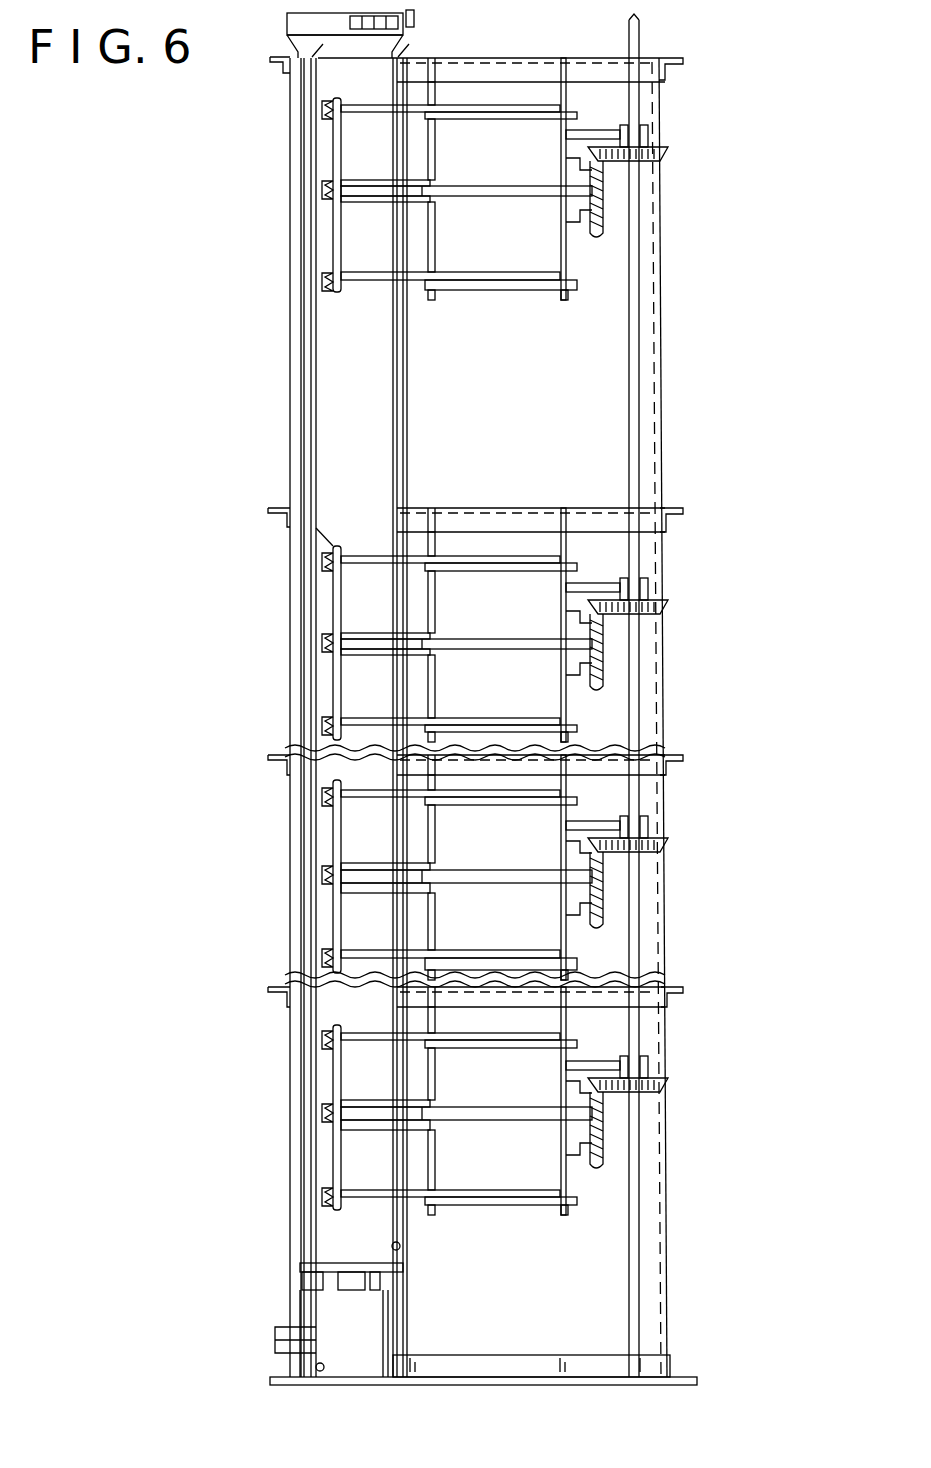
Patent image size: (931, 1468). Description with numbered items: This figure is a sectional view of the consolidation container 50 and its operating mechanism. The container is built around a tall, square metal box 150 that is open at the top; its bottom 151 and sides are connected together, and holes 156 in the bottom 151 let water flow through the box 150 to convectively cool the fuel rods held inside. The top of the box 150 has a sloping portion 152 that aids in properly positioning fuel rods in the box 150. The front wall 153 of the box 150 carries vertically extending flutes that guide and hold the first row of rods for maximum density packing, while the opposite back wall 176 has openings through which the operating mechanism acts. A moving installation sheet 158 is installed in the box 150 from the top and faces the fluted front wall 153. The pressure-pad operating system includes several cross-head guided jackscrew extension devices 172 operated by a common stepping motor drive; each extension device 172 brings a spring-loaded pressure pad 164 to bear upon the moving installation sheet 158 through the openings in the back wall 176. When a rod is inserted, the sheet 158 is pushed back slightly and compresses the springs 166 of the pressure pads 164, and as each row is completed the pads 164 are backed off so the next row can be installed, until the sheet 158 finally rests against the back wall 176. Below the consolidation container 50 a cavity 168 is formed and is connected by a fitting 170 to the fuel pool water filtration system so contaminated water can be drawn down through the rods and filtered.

The consolidation container 50 is at (668, 478).
The box 150 is at (282, 360).
The bottom 151 is at (396, 1273).
The sloping portion 152 is at (290, 50).
The front wall 153 is at (290, 262).
The holes 156 is at (330, 1286).
The moving installation sheet 158 is at (412, 50).
The pressure pad 164 is at (333, 160).
The springs 166 is at (327, 122).
The cavity 168 is at (316, 1370).
The fitting 170 is at (275, 1340).
The jackscrew extension device 172 is at (580, 292).
The back wall 176 is at (401, 1246).